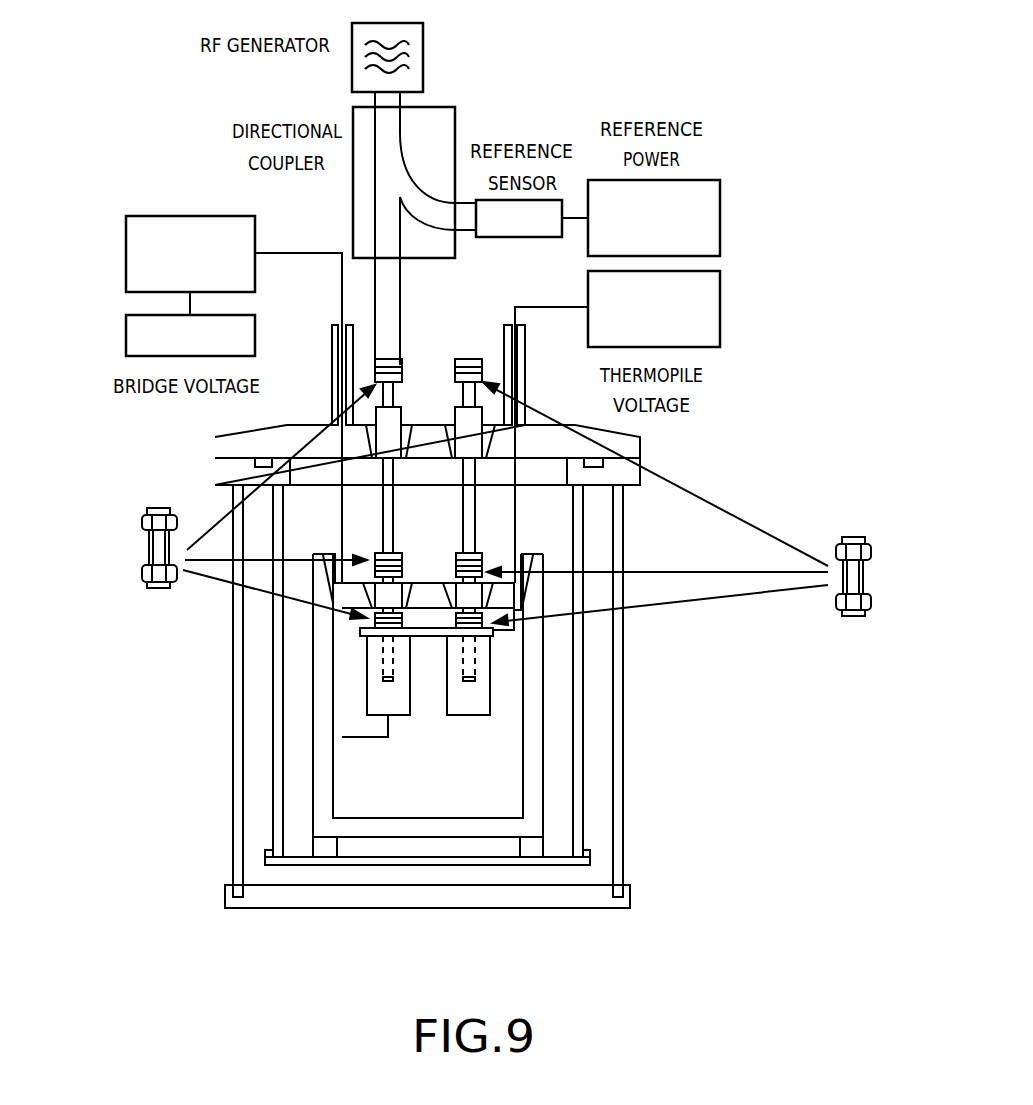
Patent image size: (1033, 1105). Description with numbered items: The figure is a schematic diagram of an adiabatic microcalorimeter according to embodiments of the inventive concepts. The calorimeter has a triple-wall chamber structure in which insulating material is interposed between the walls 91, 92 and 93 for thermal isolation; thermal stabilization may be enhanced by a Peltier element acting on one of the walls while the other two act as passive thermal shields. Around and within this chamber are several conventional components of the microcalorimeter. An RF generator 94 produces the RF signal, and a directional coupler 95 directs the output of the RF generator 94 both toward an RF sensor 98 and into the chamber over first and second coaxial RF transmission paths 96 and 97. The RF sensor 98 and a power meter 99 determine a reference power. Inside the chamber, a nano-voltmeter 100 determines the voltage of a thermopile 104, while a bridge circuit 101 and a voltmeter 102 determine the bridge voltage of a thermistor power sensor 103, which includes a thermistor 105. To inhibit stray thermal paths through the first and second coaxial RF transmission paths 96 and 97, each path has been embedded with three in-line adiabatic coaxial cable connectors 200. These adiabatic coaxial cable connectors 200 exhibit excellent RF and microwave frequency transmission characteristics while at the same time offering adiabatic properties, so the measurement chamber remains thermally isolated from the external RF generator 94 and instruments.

The wall 91 is at (623, 835).
The wall 92 is at (583, 788).
The wall 93 is at (543, 717).
The RF generator 94 is at (423, 41).
The directional coupler 95 is at (455, 122).
The first coaxial RF transmission path 96 is at (400, 300).
The second coaxial RF transmission path 97 is at (472, 520).
The RF sensor 98 is at (525, 237).
The power meter 99 is at (720, 205).
The nano-voltmeter 100 is at (720, 305).
The bridge circuit 101 is at (126, 250).
The voltmeter 102 is at (126, 335).
The thermistor power sensor 103 is at (403, 707).
The thermopile 104 is at (432, 633).
The thermistor 105 is at (387, 680).
The adiabatic coaxial cable connector 200 is at (149, 548).